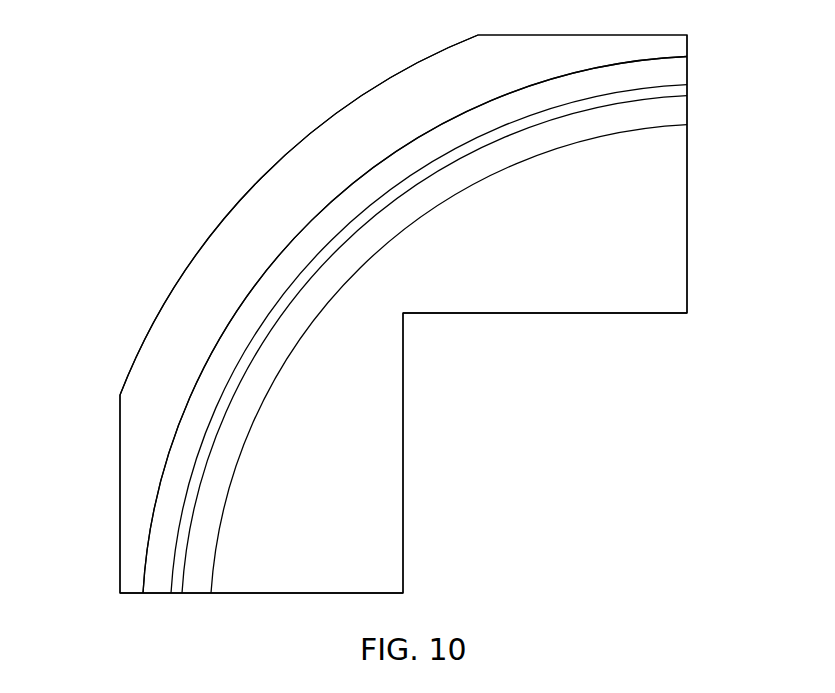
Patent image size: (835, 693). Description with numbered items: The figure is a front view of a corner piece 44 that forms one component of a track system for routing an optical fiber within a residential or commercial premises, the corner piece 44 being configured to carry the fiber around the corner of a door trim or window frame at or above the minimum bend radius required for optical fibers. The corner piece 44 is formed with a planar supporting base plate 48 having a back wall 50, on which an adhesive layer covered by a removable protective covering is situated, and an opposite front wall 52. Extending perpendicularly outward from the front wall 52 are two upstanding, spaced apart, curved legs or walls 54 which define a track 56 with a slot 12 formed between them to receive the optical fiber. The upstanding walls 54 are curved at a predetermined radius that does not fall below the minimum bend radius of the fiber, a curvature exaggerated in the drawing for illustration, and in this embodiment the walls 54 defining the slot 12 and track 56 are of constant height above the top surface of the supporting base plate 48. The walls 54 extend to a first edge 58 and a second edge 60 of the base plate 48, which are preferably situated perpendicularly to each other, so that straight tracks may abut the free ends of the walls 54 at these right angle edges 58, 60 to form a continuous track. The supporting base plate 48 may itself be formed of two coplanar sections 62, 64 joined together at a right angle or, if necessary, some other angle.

The corner piece 44 is at (120, 127).
The slot 12 is at (275, 312).
The supporting base plate 48 is at (120, 530).
The back wall 50 is at (130, 467).
The front wall 52 is at (382, 402).
The upstanding curved walls 54 is at (193, 392).
The track 56 is at (303, 228).
The first edge 58 is at (237, 593).
The second edge 60 is at (687, 195).
The first coplanar section 62 is at (353, 593).
The second coplanar section 64 is at (650, 313).